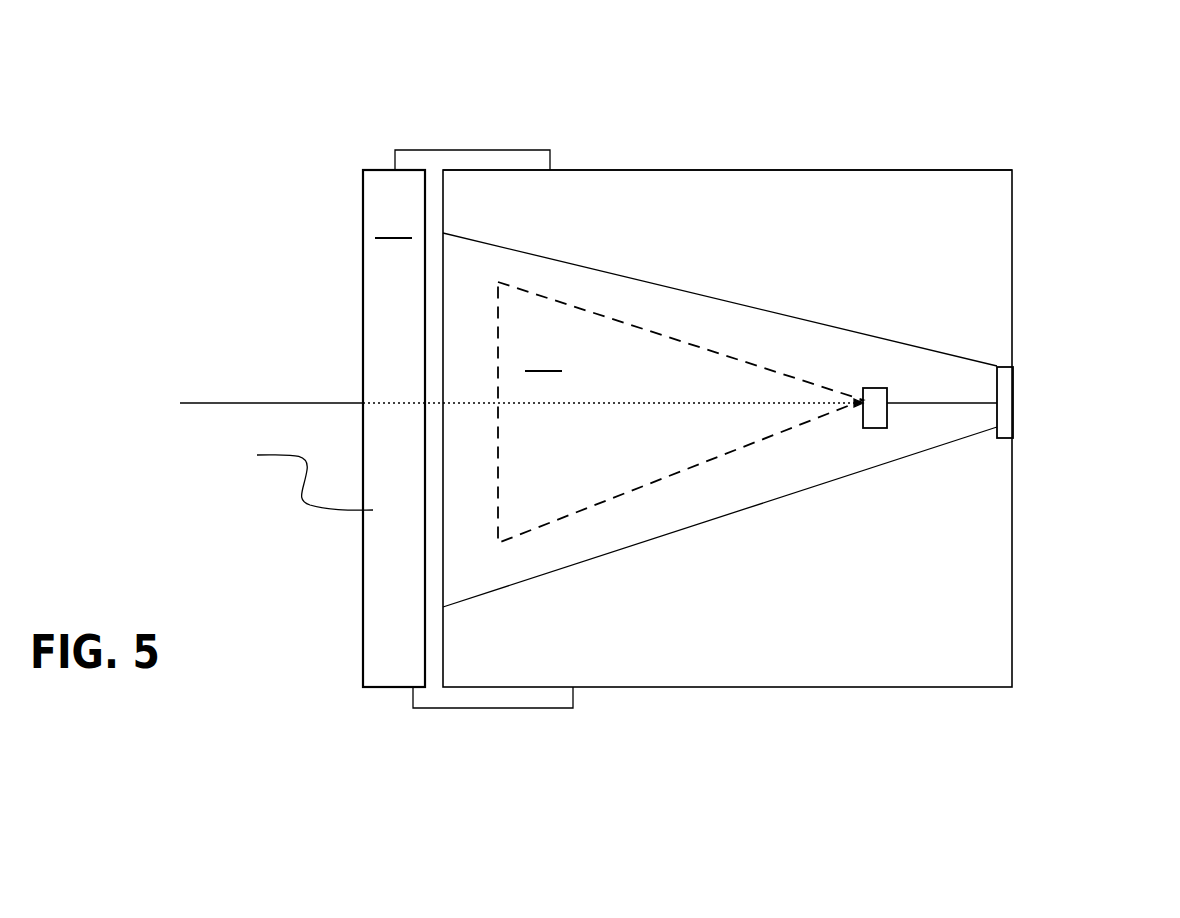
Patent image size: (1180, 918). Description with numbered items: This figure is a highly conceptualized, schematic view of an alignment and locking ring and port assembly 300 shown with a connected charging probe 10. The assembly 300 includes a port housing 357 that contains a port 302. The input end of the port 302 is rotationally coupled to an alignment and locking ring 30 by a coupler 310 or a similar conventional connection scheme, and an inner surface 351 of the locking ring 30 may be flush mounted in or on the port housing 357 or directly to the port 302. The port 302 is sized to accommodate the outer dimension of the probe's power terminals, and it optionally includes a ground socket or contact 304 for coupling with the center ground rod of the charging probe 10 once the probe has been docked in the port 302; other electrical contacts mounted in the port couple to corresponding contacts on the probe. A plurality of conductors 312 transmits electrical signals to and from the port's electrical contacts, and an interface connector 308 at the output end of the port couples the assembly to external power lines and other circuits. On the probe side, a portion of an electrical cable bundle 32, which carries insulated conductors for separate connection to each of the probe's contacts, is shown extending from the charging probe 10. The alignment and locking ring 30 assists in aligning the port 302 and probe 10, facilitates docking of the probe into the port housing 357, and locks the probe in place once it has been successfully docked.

The alignment and locking ring and port assembly 300 is at (845, 135).
The port housing 357 is at (600, 170).
The alignment and locking ring 30 is at (269, 428).
The electrical cable bundle 32 is at (310, 403).
The coupler 310 is at (443, 148).
The inner surface of the locking ring 351 is at (423, 664).
The port 302 is at (773, 316).
The ground socket or contact 304 is at (890, 393).
The interface connector 308 is at (1013, 423).
The conductors 312 is at (928, 402).
The charging probe 10 is at (680, 412).